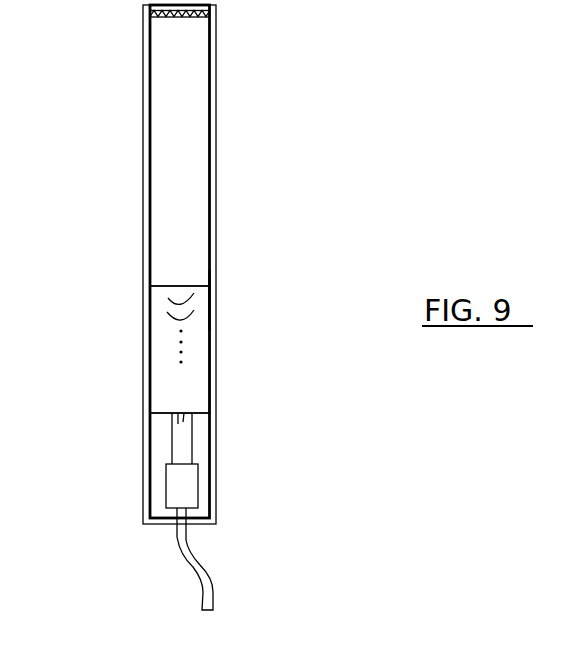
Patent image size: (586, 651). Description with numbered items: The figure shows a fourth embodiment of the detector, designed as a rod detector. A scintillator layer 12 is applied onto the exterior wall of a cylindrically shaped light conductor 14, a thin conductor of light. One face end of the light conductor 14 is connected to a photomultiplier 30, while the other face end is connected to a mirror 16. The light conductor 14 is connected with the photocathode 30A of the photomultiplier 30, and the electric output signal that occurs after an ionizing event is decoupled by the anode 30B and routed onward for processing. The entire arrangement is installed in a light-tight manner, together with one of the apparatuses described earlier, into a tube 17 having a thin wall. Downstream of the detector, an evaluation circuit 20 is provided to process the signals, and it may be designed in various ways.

The scintillator layer 12 is at (208, 140).
The light conductor 14 is at (200, 193).
The mirror 16 is at (207, 13).
The tube 17 is at (222, 297).
The evaluation circuit 20 is at (191, 486).
The photomultiplier 30 is at (154, 358).
The photocathode 30A is at (156, 294).
The anode 30B is at (153, 414).